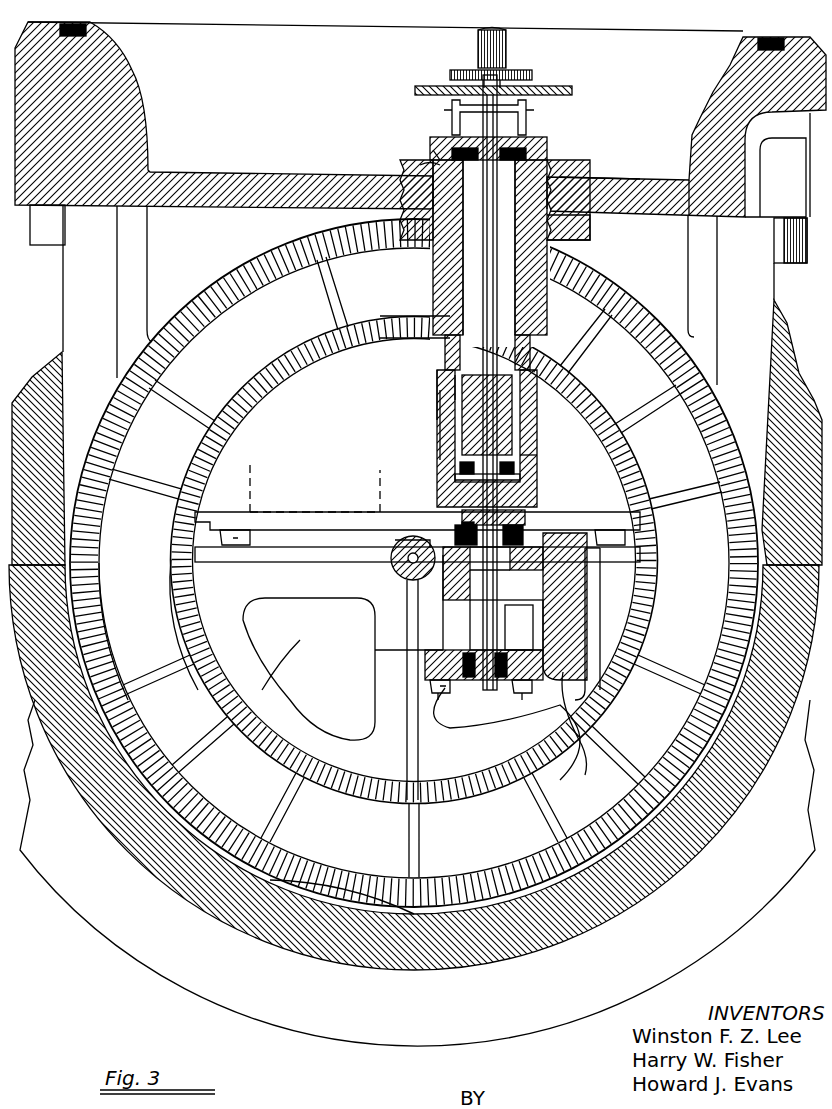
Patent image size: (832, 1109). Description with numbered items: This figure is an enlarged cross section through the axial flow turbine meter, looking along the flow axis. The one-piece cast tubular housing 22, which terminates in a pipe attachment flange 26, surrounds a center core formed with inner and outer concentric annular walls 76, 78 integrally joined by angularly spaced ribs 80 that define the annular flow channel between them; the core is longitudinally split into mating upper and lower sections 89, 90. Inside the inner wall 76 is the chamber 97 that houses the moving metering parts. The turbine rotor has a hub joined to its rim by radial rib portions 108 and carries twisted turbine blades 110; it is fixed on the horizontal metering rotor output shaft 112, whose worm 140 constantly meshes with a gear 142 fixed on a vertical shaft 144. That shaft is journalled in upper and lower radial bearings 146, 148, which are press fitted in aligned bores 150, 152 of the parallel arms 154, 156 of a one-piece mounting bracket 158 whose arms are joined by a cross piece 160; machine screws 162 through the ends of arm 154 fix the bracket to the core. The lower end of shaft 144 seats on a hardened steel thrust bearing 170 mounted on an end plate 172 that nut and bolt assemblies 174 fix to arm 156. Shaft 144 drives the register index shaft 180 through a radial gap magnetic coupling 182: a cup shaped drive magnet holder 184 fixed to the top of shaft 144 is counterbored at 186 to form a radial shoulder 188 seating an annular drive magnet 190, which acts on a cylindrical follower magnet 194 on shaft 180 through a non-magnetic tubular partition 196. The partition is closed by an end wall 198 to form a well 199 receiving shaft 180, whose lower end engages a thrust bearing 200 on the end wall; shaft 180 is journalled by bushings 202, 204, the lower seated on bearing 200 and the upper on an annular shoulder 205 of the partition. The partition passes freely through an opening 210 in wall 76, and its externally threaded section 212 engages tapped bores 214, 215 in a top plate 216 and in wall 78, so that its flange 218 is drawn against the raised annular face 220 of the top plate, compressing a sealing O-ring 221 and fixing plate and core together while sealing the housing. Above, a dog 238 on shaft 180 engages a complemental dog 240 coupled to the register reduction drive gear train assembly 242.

The housing 22 is at (200, 900).
The pipe attachment flange 26 is at (88, 915).
The inner annular wall 76 is at (190, 665).
The outer annular wall 78 is at (412, 905).
The ribs 80 is at (424, 280).
The upper core section 89 is at (92, 530).
The lower core section 90 is at (95, 640).
The chamber 97 is at (330, 692).
The rib portions 108 is at (298, 595).
The turbine blades 110 is at (662, 460).
The metering rotor output shaft 112 is at (416, 580).
The worm 140 is at (392, 562).
The gear 142 is at (452, 570).
The vertical shaft 144 is at (478, 630).
The upper radial bearing 146 is at (460, 530).
The lower radial bearing 148 is at (500, 658).
The bore 150 is at (520, 528).
The bore 152 is at (478, 684).
The upper bracket arm 154 is at (515, 560).
The lower bracket arm 156 is at (443, 670).
The mounting bracket 158 is at (585, 740).
The cross piece 160 is at (585, 600).
The machine screws 162 is at (250, 548).
The thrust bearing 170 is at (530, 680).
The end plate 172 is at (450, 720).
The nut and bolt assemblies 174 is at (430, 692).
The register index shaft 180 is at (498, 306).
The magnetic coupling 182 is at (538, 375).
The drive magnet holder 184 is at (540, 390).
The counterbore 186 is at (436, 412).
The radial shoulder 188 is at (460, 468).
The drive magnet 190 is at (440, 440).
The follower magnet 194 is at (455, 390).
The tubular partition 196 is at (540, 290).
The end wall 198 is at (530, 512).
The well 199 is at (522, 330).
The thrust bearing 200 is at (536, 470).
The upper bushing 202 is at (548, 155).
The lower bushing 204 is at (455, 478).
The annular shoulder 205 is at (448, 137).
The opening 210 is at (440, 348).
The externally threaded section 212 is at (550, 232).
The tapped bore 214 is at (552, 190).
The tapped bore 215 is at (430, 226).
The top plate 216 is at (662, 178).
The flange 218 is at (432, 150).
The raised annular flat face 220 is at (660, 172).
The sealing O-ring 221 is at (418, 165).
The dog 238 is at (530, 125).
The complemental dog 240 is at (528, 100).
The register reduction drive gear train assembly 242 is at (508, 50).